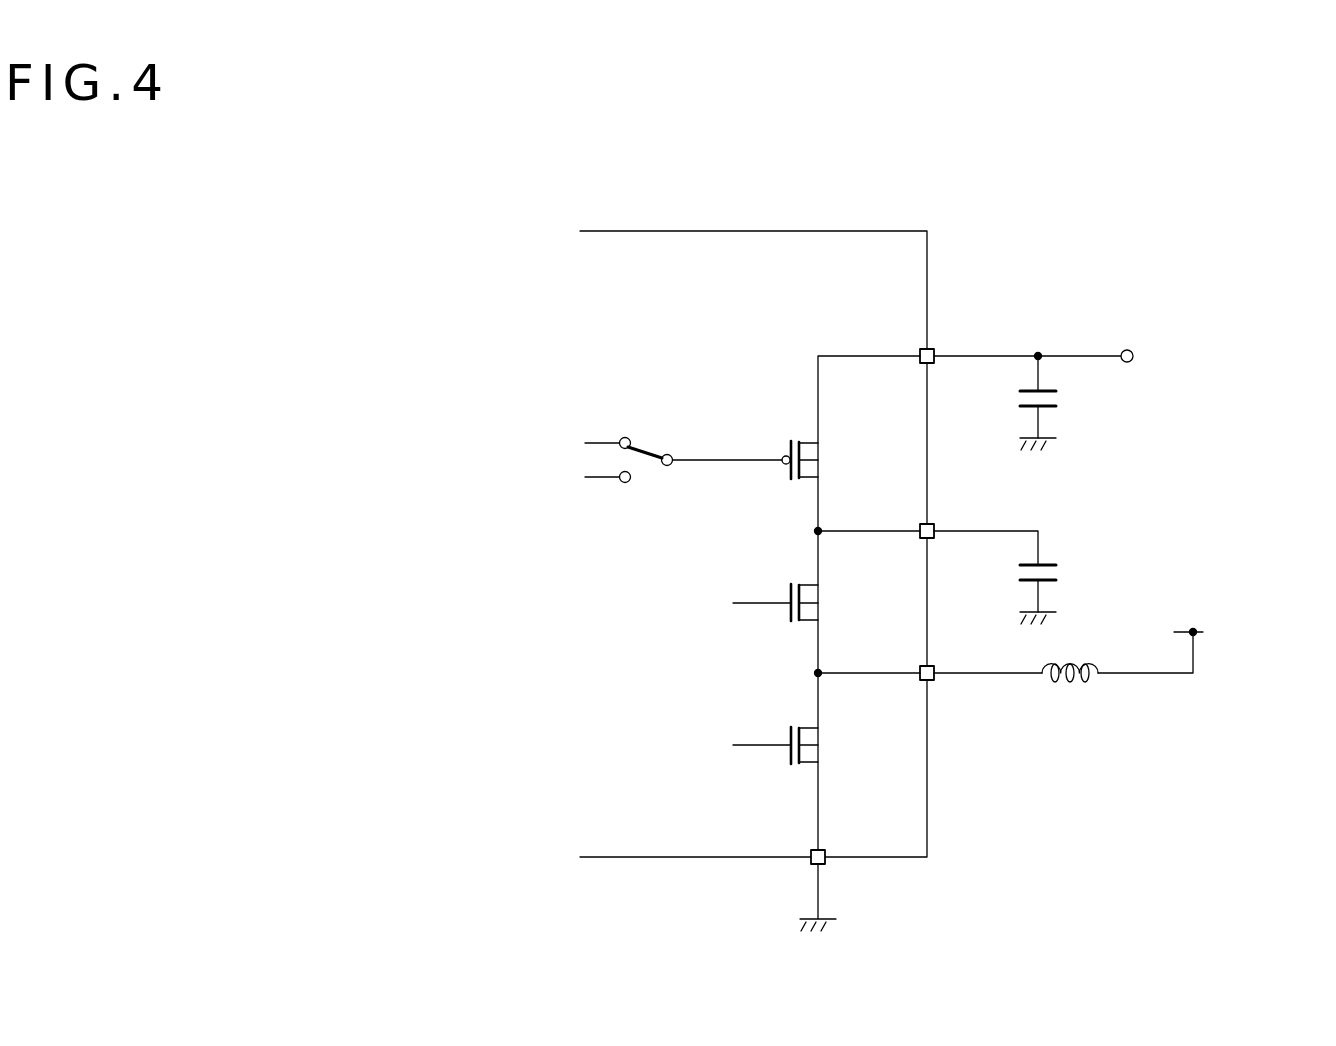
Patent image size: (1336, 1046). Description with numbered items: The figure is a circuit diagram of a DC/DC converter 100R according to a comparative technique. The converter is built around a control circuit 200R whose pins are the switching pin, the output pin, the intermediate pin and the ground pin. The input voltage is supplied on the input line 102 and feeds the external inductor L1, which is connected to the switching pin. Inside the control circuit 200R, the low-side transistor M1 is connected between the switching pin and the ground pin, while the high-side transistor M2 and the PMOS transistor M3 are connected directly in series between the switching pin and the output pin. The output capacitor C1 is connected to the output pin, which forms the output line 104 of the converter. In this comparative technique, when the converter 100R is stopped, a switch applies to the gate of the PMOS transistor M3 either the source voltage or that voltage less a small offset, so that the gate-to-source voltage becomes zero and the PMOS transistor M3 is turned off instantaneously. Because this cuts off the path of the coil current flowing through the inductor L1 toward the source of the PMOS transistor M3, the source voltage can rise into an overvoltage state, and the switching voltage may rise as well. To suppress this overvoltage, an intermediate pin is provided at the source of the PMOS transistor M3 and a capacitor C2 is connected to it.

The DC/DC converter 100R is at (1330, 168).
The control circuit 200R is at (708, 231).
The input line 102 is at (1205, 630).
The output line 104 is at (1131, 363).
The low-side transistor M1 is at (822, 740).
The high-side transistor M2 is at (822, 598).
The PMOS transistor M3 is at (822, 455).
The output capacitor C1 is at (1061, 402).
The capacitor C2 is at (1018, 577).
The inductor L1 is at (1016, 691).